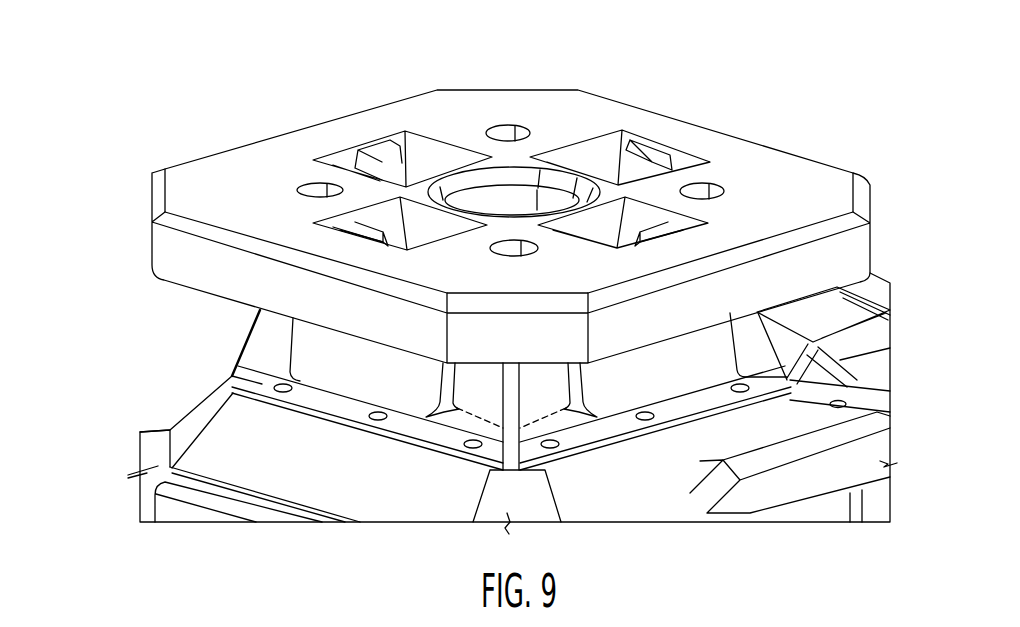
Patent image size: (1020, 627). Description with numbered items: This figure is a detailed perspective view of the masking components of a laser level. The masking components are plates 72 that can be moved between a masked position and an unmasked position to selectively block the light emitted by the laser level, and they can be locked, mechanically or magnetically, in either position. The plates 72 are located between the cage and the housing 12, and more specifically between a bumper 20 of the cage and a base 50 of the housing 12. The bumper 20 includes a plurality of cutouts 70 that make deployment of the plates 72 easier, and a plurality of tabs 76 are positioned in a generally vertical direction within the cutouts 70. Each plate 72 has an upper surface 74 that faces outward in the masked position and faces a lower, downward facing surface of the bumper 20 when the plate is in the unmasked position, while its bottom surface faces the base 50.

The housing 12 is at (121, 463).
The bumper 20 is at (427, 100).
The base 50 is at (540, 500).
The cutouts 70 is at (621, 132).
The plates 72 is at (303, 346).
The upper surface 74 is at (363, 387).
The tabs 76 is at (653, 162).